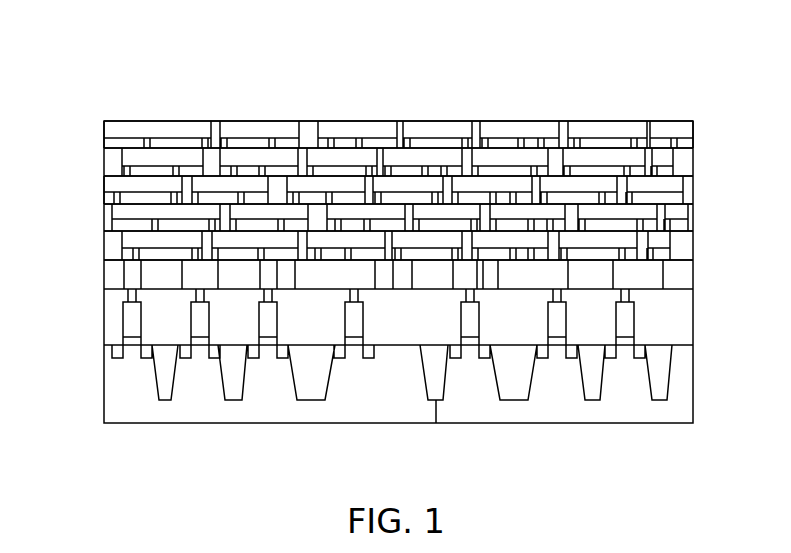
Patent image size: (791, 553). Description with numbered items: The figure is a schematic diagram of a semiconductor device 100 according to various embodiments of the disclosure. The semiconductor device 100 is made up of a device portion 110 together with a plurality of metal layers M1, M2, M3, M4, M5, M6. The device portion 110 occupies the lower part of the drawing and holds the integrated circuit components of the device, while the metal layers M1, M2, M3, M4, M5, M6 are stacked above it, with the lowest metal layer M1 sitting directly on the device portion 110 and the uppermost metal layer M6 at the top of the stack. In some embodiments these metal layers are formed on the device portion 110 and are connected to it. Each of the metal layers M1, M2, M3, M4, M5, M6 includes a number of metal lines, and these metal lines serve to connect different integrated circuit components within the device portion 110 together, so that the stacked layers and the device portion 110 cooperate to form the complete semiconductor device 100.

The semiconductor device 100 is at (130, 48).
The device portion 110 is at (705, 288).
The metal layer M1 is at (82, 278).
The metal layer M2 is at (82, 249).
The metal layer M3 is at (82, 222).
The metal layer M4 is at (82, 193).
The metal layer M5 is at (82, 165).
The metal layer M6 is at (82, 137).